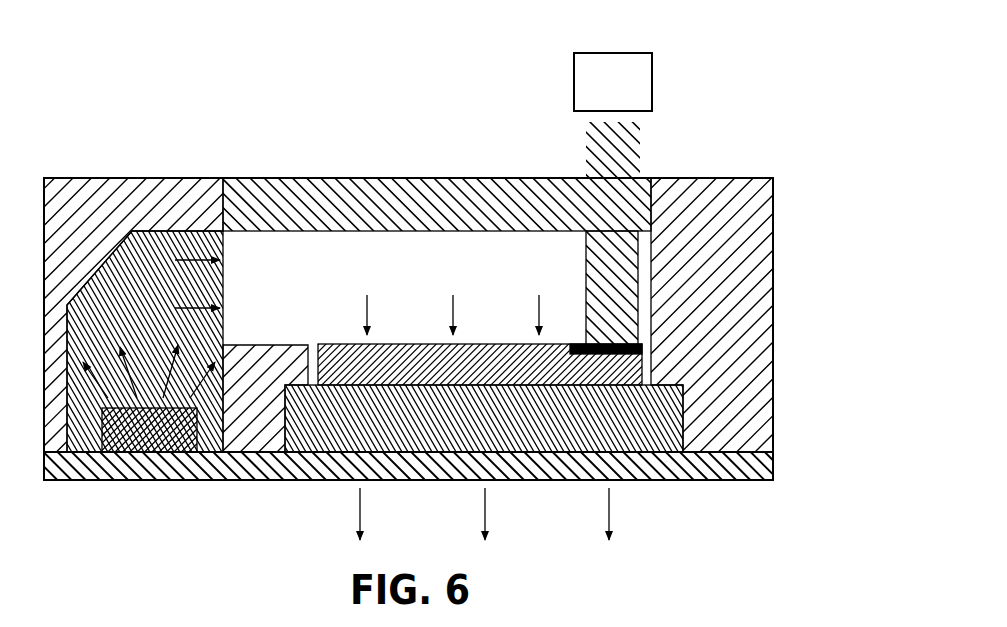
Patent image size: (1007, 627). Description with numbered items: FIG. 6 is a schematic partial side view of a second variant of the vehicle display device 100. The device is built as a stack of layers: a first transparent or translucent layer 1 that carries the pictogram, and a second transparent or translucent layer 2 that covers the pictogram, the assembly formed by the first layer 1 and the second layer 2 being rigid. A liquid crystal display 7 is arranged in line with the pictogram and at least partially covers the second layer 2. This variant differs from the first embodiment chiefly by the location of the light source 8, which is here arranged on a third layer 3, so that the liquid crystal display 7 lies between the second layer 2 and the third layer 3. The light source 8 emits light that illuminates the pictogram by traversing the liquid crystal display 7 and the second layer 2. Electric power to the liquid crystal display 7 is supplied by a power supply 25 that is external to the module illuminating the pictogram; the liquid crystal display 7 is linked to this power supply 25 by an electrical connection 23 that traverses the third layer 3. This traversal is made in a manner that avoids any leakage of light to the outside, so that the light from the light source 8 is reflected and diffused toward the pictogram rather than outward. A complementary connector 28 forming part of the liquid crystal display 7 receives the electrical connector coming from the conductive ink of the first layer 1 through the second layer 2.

The vehicle display device 100 is at (421, 142).
The first transparent or translucent layer 1 is at (726, 467).
The second transparent or translucent layer 2 is at (658, 415).
The third layer 3 is at (310, 198).
The liquid crystal display 7 is at (613, 370).
The light source 8 is at (130, 432).
The electrical connection 23 is at (613, 158).
The power supply 25 is at (613, 82).
The complementary connector 28 is at (643, 348).